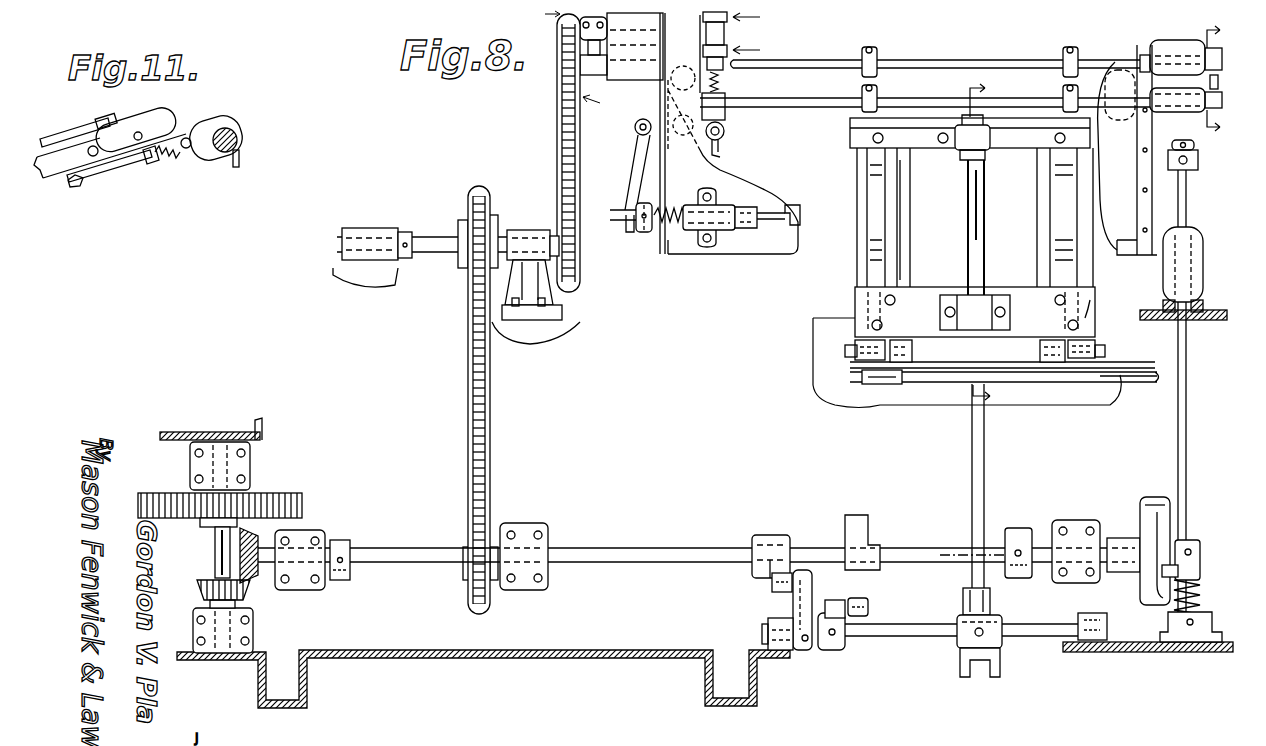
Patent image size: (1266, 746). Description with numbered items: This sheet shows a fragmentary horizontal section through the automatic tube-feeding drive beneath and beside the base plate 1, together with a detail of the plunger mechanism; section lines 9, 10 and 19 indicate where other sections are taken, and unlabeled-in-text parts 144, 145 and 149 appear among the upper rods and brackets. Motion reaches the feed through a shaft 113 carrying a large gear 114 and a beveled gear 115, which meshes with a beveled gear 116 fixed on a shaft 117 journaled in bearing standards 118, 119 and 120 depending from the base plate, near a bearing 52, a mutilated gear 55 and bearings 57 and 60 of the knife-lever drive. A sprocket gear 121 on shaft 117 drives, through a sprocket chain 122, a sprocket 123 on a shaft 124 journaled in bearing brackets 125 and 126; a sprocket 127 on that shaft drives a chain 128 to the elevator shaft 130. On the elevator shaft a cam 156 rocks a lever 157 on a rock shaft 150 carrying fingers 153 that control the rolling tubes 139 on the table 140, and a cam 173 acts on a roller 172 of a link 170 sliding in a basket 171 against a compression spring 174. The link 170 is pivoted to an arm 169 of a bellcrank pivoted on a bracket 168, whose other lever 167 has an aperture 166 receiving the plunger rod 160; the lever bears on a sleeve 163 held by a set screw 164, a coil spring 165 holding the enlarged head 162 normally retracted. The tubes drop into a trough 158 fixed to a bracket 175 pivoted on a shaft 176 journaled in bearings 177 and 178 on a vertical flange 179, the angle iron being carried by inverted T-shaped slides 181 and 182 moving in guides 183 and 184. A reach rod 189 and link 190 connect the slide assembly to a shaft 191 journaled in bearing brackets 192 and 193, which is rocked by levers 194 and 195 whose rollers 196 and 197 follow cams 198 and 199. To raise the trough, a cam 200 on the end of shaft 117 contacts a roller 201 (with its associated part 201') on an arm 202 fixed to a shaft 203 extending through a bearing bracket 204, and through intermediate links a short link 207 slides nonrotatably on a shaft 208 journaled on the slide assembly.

In FIG. 8, the base plate 1 is at (480, 660).
In FIG. 8, the section line 9 is at (565, 66).
In FIG. 8, the section line 10 is at (989, 74).
In FIG. 8, the section line 19 is at (992, 243).
In FIG. 8, the bearing 52 is at (858, 292).
In FIG. 8, the mutilated gear 55 is at (1150, 382).
In FIG. 8, the bearing 57 is at (1140, 500).
In FIG. 8, the bearing 60 is at (1196, 158).
In FIG. 8, the shaft 113 is at (215, 560).
In FIG. 8, the large gear 114 is at (165, 478).
In FIG. 8, the beveled gear 115 is at (200, 587).
In FIG. 8, the beveled gear 116 is at (238, 540).
In FIG. 8, the shaft 117 is at (412, 536).
In FIG. 8, the bearing standard 118 is at (310, 532).
In FIG. 8, the bearing standard 119 is at (535, 508).
In FIG. 8, the bearing standard 120 is at (1093, 508).
In FIG. 8, the sprocket gear 121 is at (470, 553).
In FIG. 8, the sprocket chain 122 is at (490, 418).
In FIG. 8, the sprocket 123 is at (485, 212).
In FIG. 8, the shaft 124 is at (430, 237).
In FIG. 8, the bearing bracket 125 is at (375, 228).
In FIG. 8, the bearing bracket 126 is at (555, 308).
In FIG. 8, the sprocket 127 is at (543, 230).
In FIG. 8, the chain 128 is at (557, 134).
In FIG. 11, the elevator shaft 130 is at (228, 128).
In FIG. 8, the elevator shaft 130 is at (732, 46).
In FIG. 8, the tube 139 is at (884, 384).
In FIG. 11, the table 140 is at (170, 100).
In FIG. 8, the table 140 is at (1145, 255).
In FIG. 8, the clamp 144 is at (872, 48).
In FIG. 8, the rod 145 is at (1022, 46).
In FIG. 8, the bracket 149 is at (593, 58).
In FIG. 8, the rock shaft 150 is at (838, 90).
In FIG. 8, the fingers 153 is at (868, 112).
In FIG. 8, the cam 156 is at (1222, 60).
In FIG. 8, the lever 157 is at (1218, 82).
In FIG. 8, the trough 158 is at (835, 400).
In FIG. 8, the plunger rod 160 is at (765, 232).
In FIG. 8, the enlarged head 162 is at (800, 205).
In FIG. 8, the sleeve 163 is at (650, 203).
In FIG. 8, the set screw 164 is at (644, 232).
In FIG. 8, the coil spring 165 is at (672, 252).
In FIG. 8, the aperture 166 is at (630, 212).
In FIG. 11, the lever 167 is at (82, 132).
In FIG. 8, the lever 167 is at (640, 159).
In FIG. 8, the bracket 168 is at (655, 108).
In FIG. 11, the arm 169 is at (72, 187).
In FIG. 8, the arm 169 is at (722, 152).
In FIG. 11, the link 170 is at (100, 180).
In FIG. 8, the link 170 is at (725, 120).
In FIG. 11, the basket 171 is at (158, 165).
In FIG. 11, the roller 172 is at (190, 148).
In FIG. 11, the cam 173 is at (240, 150).
In FIG. 11, the compression spring 174 is at (170, 155).
In FIG. 8, the bracket 175 is at (905, 362).
In FIG. 8, the shaft 176 is at (845, 350).
In FIG. 8, the bearing 177 is at (860, 325).
In FIG. 8, the bearing 178 is at (1085, 346).
In FIG. 8, the vertical flange 179 is at (1087, 310).
In FIG. 8, the slide 181 is at (1072, 270).
In FIG. 8, the slide 182 is at (868, 252).
In FIG. 8, the guide 183 is at (1050, 228).
In FIG. 8, the guide 184 is at (908, 222).
In FIG. 8, the reach rod 189 is at (985, 470).
In FIG. 8, the link 190 is at (958, 616).
In FIG. 8, the shaft 191 is at (945, 637).
In FIG. 8, the bearing bracket 192 is at (768, 628).
In FIG. 8, the bearing bracket 193 is at (1115, 608).
In FIG. 8, the lever 194 is at (793, 610).
In FIG. 8, the lever 195 is at (840, 650).
In FIG. 8, the roller 196 is at (772, 583).
In FIG. 8, the roller 197 is at (862, 600).
In FIG. 8, the cam 198 is at (795, 518).
In FIG. 8, the cam 199 is at (880, 525).
In FIG. 8, the cam 200 is at (1160, 497).
In FIG. 8, the roller 201 is at (1175, 647).
In FIG. 8, the spring 201' is at (1207, 597).
In FIG. 8, the arm 202 is at (1200, 572).
In FIG. 8, the shaft 203 is at (1187, 427).
In FIG. 8, the bearing bracket 204 is at (1203, 275).
In FIG. 8, the short link 207 is at (958, 150).
In FIG. 8, the shaft 208 is at (984, 262).